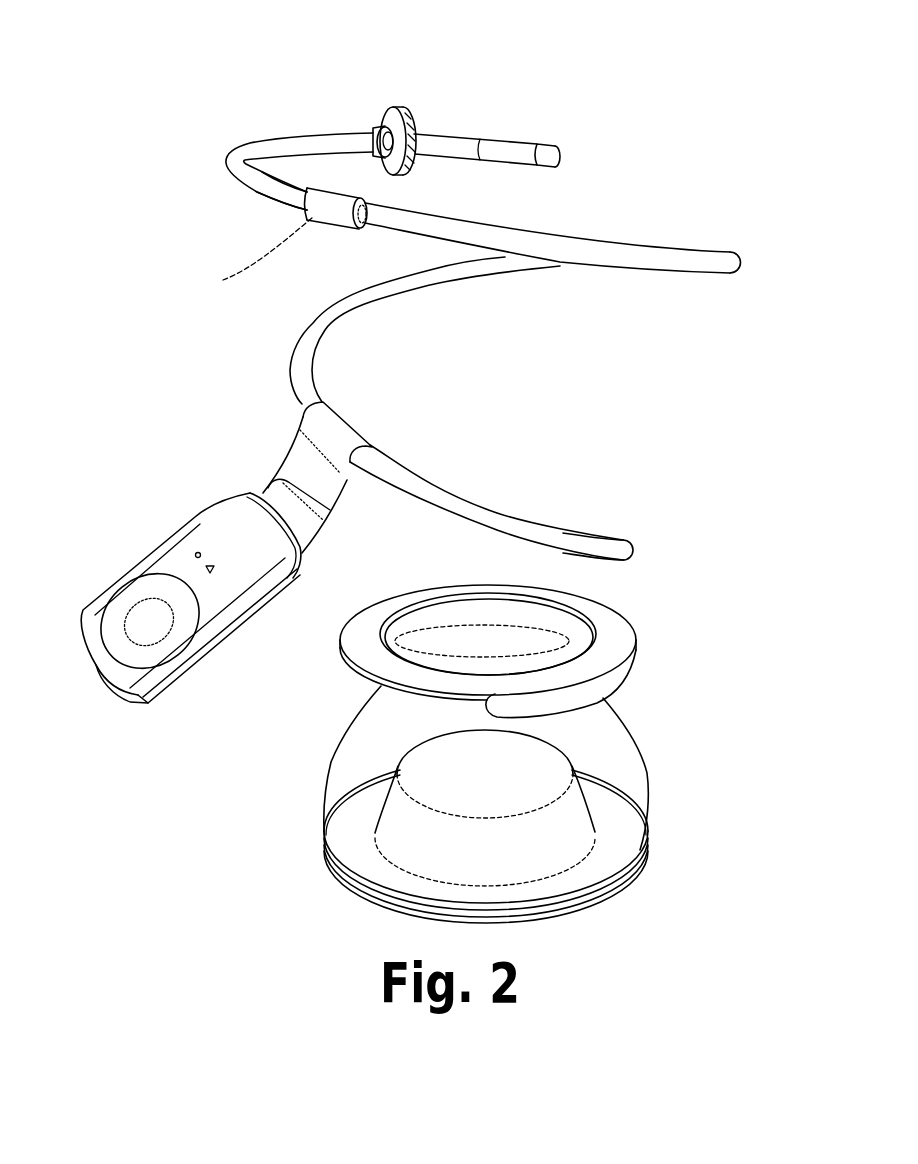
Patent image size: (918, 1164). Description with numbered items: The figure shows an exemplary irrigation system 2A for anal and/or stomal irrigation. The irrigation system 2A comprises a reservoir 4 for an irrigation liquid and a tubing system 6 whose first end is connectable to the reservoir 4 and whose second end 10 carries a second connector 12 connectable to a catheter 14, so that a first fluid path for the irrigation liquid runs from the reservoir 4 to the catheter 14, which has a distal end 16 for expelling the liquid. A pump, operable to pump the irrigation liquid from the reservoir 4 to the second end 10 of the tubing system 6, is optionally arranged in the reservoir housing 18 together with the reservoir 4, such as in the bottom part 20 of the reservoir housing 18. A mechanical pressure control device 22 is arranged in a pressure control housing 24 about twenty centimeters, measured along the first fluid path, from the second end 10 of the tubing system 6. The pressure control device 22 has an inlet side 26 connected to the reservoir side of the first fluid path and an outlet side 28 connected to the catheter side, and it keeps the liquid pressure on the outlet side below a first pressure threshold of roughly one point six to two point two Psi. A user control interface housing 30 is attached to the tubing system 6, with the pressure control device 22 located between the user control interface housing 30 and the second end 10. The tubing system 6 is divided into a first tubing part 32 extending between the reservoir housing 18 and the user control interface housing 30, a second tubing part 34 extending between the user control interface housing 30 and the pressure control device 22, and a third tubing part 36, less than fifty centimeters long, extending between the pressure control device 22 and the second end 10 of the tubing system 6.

The irrigation system 2A is at (165, 230).
The reservoir 4 is at (397, 733).
The tubing system 6 is at (428, 493).
The second end 10 is at (388, 116).
The second connector 12 is at (374, 126).
The catheter 14 is at (477, 137).
The distal end 16 is at (553, 153).
The reservoir housing 18 is at (633, 718).
The bottom part 20 is at (386, 843).
The pressure control device 22 is at (250, 258).
The pressure control housing 24 is at (338, 217).
The inlet side 26 is at (370, 200).
The outlet side 28 is at (306, 211).
The user control interface housing 30 is at (208, 505).
The first tubing part 32 is at (502, 514).
The second tubing part 34 is at (663, 247).
The third tubing part 36 is at (253, 136).